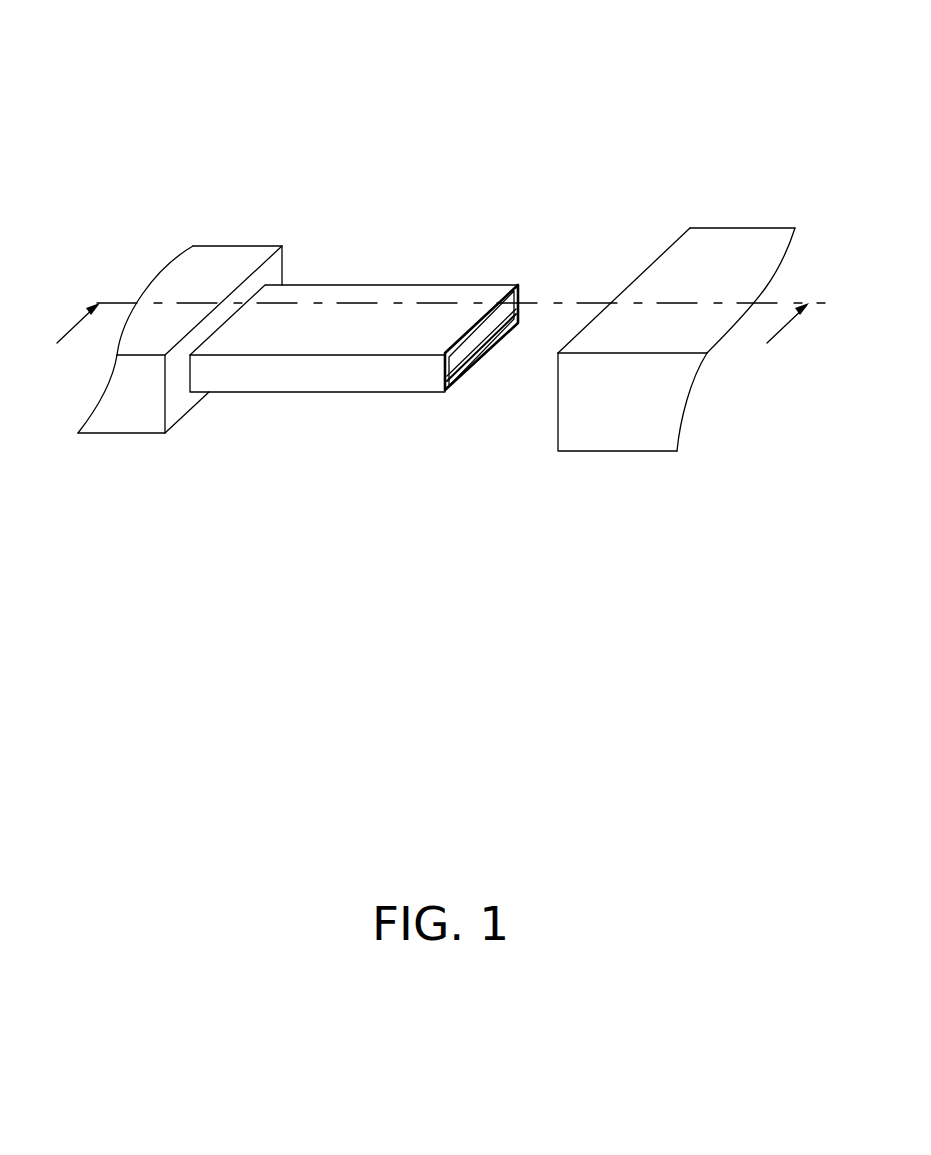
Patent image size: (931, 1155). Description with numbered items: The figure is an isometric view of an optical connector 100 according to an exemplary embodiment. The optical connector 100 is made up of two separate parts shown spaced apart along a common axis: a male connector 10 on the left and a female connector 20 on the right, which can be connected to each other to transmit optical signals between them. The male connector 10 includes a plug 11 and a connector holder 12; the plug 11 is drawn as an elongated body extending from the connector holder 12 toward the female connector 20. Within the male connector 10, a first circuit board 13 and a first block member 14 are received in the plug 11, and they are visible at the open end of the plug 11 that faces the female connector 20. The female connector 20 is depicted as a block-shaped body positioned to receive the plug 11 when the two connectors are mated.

The optical connector 100 is at (419, 54).
The male connector 10 is at (322, 383).
The plug 11 is at (343, 383).
The connector holder 12 is at (145, 418).
The first circuit board 13 is at (483, 347).
The first block member 14 is at (518, 285).
The female connector 20 is at (717, 238).